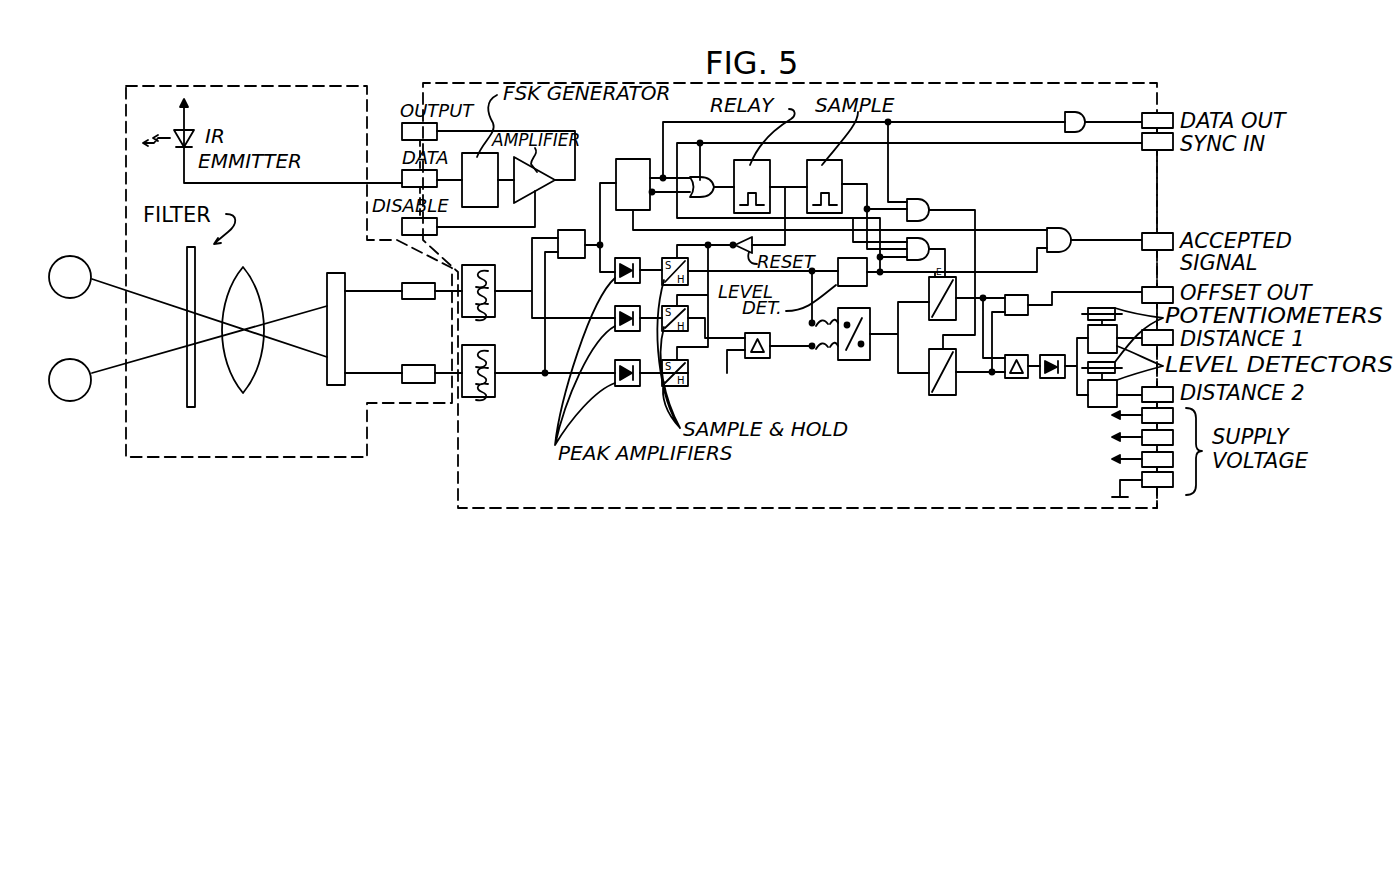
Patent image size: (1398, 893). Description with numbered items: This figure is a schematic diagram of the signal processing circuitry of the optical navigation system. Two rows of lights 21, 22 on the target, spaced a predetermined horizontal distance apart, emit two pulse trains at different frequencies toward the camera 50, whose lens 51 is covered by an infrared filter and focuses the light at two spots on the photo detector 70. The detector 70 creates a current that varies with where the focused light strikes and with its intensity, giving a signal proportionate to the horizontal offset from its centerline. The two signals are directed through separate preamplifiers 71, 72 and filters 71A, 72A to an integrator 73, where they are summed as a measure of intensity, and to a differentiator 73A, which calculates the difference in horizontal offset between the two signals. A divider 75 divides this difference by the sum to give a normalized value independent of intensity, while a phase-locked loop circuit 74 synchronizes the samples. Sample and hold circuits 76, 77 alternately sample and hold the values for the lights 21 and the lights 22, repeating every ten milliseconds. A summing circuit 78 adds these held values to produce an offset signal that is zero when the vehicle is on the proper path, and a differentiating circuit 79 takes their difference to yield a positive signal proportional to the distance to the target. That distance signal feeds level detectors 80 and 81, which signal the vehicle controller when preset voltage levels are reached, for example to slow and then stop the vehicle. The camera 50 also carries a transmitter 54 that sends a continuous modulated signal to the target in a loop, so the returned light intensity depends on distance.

The row of lights 21 is at (82, 257).
The row of lights 22 is at (78, 400).
The camera 50 is at (250, 457).
The lens 51 is at (240, 367).
The transmitter 54 is at (402, 180).
The photo detector 70 is at (328, 279).
The preamplifier 71 is at (404, 283).
The preamplifier 72 is at (418, 383).
The filter 71A is at (472, 265).
The filter 72A is at (483, 397).
The integrator 73 is at (570, 258).
The differentiator 73A is at (764, 358).
The phase-locked loop circuit 74 is at (637, 159).
The divider 75 is at (855, 360).
The sample and hold circuit 76 is at (929, 289).
The sample and hold circuit 77 is at (940, 395).
The summing circuit 78 is at (1015, 295).
The differentiating circuit 79 is at (1012, 378).
The level detector 80 is at (1088, 330).
The level detector 81 is at (1094, 407).